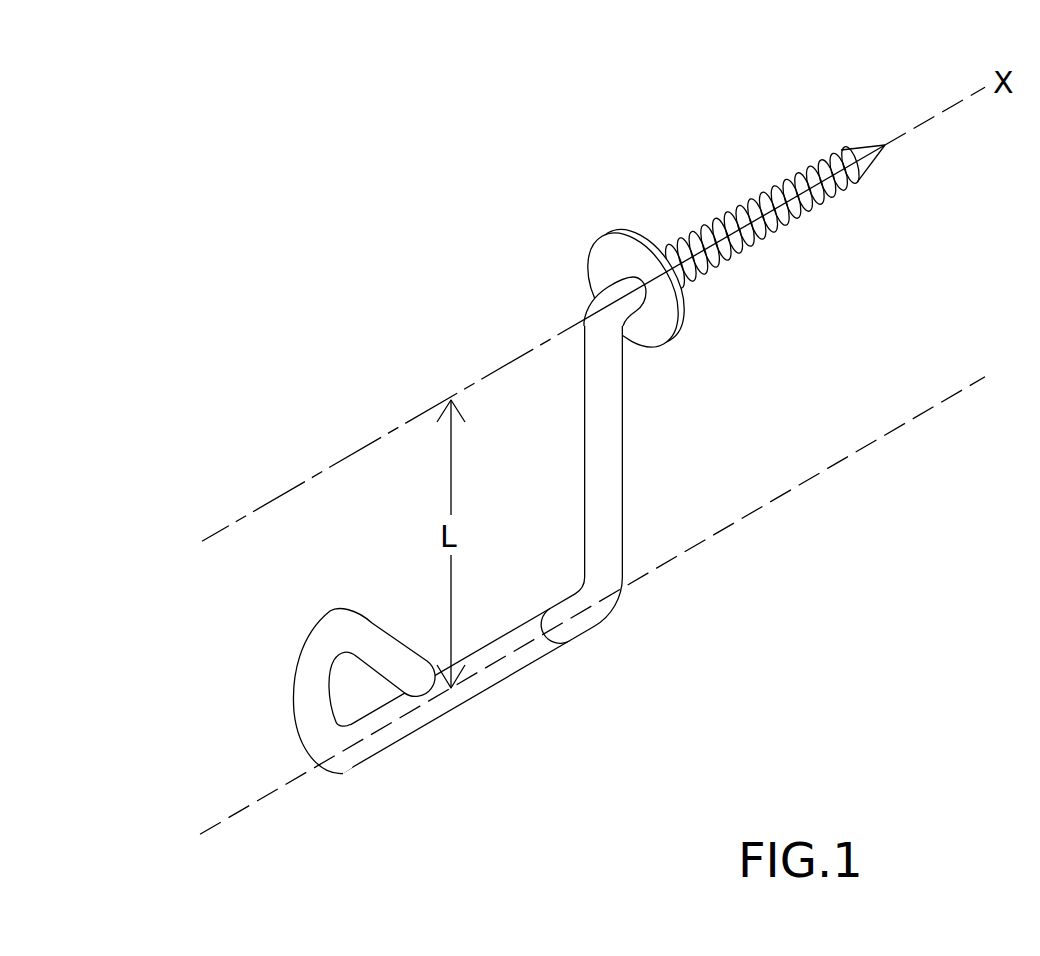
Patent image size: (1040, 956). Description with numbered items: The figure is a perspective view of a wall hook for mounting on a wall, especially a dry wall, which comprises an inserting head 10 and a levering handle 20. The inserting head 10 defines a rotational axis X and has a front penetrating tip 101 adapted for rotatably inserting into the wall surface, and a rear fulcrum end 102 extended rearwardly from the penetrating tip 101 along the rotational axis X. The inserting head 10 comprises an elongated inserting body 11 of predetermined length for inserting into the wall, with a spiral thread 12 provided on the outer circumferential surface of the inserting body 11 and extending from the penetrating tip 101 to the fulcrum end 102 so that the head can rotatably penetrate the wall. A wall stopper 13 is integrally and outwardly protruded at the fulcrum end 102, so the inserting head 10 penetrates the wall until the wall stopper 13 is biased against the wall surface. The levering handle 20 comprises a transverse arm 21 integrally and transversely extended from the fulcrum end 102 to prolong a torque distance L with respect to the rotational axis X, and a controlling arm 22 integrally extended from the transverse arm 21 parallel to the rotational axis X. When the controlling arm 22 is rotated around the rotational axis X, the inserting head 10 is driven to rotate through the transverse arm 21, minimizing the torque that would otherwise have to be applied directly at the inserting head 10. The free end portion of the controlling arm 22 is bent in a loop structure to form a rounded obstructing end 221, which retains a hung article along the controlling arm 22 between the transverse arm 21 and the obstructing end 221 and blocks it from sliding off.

The inserting head 10 is at (554, 402).
The front penetrating tip 101 is at (890, 128).
The rear fulcrum end 102 is at (672, 240).
The elongated inserting body 11 is at (772, 250).
The spiral thread 12 is at (820, 167).
The wall stopper 13 is at (613, 257).
The levering handle 20 is at (512, 531).
The transverse arm 21 is at (605, 495).
The controlling arm 22 is at (515, 662).
The obstructing end 221 is at (336, 598).